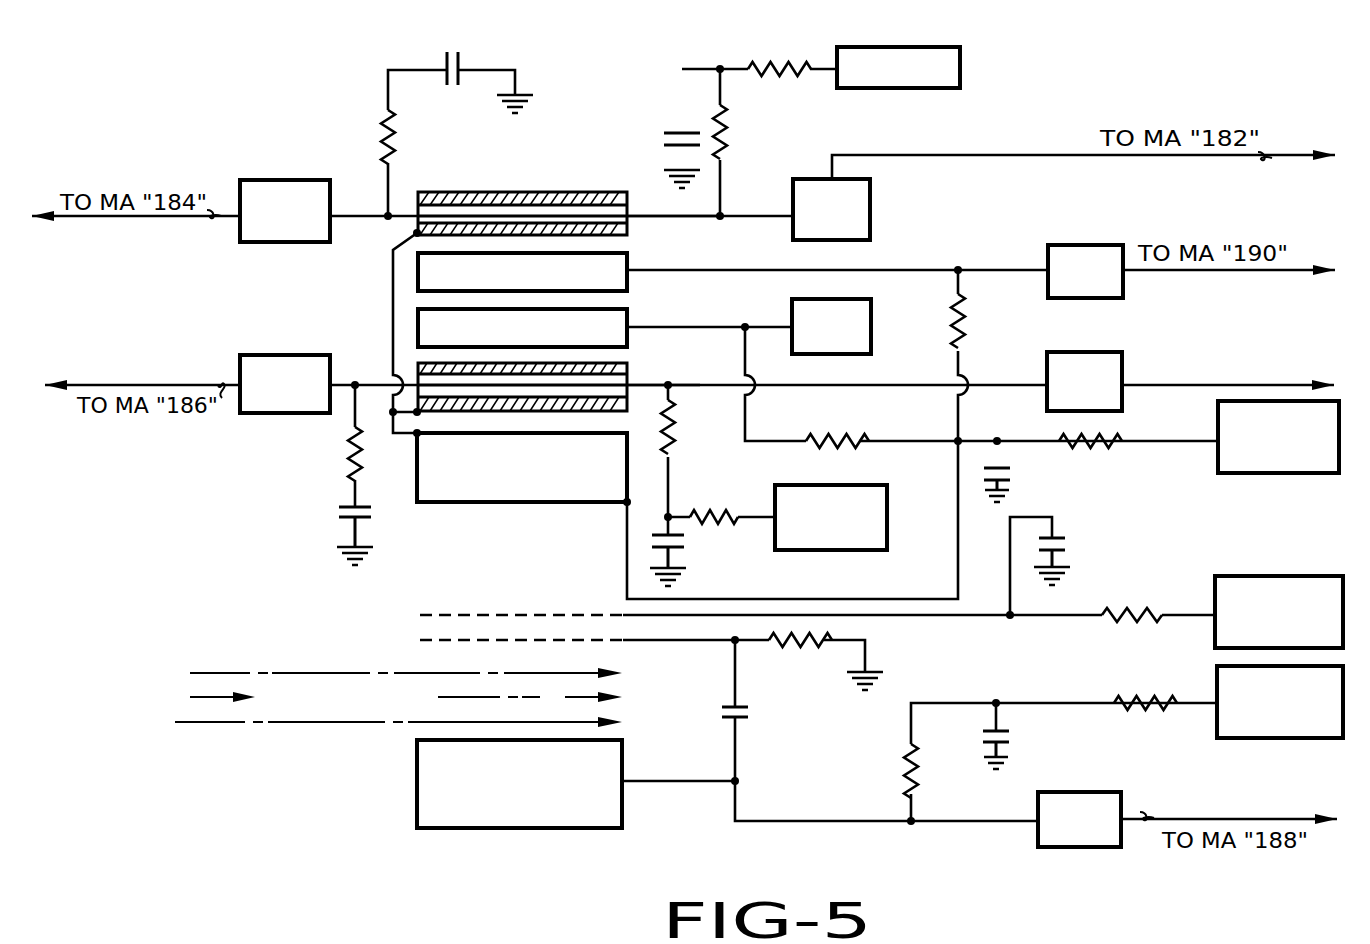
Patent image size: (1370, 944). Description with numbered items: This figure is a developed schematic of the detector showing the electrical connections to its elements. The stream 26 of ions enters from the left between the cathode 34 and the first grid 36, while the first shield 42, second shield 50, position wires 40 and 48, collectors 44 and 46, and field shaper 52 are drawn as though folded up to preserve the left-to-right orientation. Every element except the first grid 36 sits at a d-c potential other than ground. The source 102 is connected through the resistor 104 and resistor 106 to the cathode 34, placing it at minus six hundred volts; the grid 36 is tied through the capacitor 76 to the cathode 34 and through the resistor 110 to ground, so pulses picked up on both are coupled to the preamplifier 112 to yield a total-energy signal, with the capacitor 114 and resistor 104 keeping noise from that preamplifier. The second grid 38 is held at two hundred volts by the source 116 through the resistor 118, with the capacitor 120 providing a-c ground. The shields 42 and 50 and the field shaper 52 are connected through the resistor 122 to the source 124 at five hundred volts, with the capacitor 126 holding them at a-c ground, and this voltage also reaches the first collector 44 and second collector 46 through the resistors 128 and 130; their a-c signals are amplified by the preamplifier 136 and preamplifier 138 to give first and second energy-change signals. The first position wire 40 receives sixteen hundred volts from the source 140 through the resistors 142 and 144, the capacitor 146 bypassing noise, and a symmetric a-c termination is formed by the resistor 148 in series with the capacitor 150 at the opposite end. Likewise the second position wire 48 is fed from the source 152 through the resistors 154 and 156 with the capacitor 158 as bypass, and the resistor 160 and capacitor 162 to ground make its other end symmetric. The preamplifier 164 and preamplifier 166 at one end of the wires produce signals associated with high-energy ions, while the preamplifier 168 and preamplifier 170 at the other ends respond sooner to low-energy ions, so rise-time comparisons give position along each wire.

The stream of ions 26 is at (389, 704).
The cathode 34 is at (530, 790).
The first grid 36 is at (440, 640).
The second grid 38 is at (450, 614).
The first position wire 40 is at (698, 218).
The first shield 42 is at (486, 194).
The first collector 44 is at (565, 283).
The second collector 46 is at (527, 340).
The second position wire 48 is at (646, 380).
The second shield 50 is at (486, 408).
The field shaper 52 is at (530, 481).
The capacitor 76 is at (721, 708).
The source 102 is at (1290, 735).
The resistor 104 is at (1142, 694).
The resistor 106 is at (900, 762).
The resistor 110 is at (798, 650).
The preamplifier 112 is at (1112, 806).
The capacitor 114 is at (1010, 748).
The source 116 is at (1278, 588).
The resistor 118 is at (1132, 600).
The capacitor 120 is at (1060, 546).
The resistor 122 is at (1086, 452).
The source 124 is at (1260, 472).
The capacitor 126 is at (1006, 482).
The resistor 128 is at (970, 316).
The resistor 130 is at (834, 432).
The preamplifier 136 is at (1120, 284).
The preamplifier 138 is at (855, 310).
The source 140 is at (952, 73).
The resistor 142 is at (780, 78).
The resistor 144 is at (732, 138).
The capacitor 146 is at (670, 140).
The resistor 148 is at (379, 138).
The capacitor 150 is at (448, 54).
The source 152 is at (839, 548).
The resistor 154 is at (720, 508).
The resistor 156 is at (678, 432).
The capacitor 158 is at (683, 540).
The resistor 160 is at (339, 461).
The capacitor 162 is at (334, 514).
The preamplifier 164 is at (295, 240).
The preamplifier 166 is at (287, 402).
The preamplifier 168 is at (858, 209).
The preamplifier 170 is at (1108, 366).